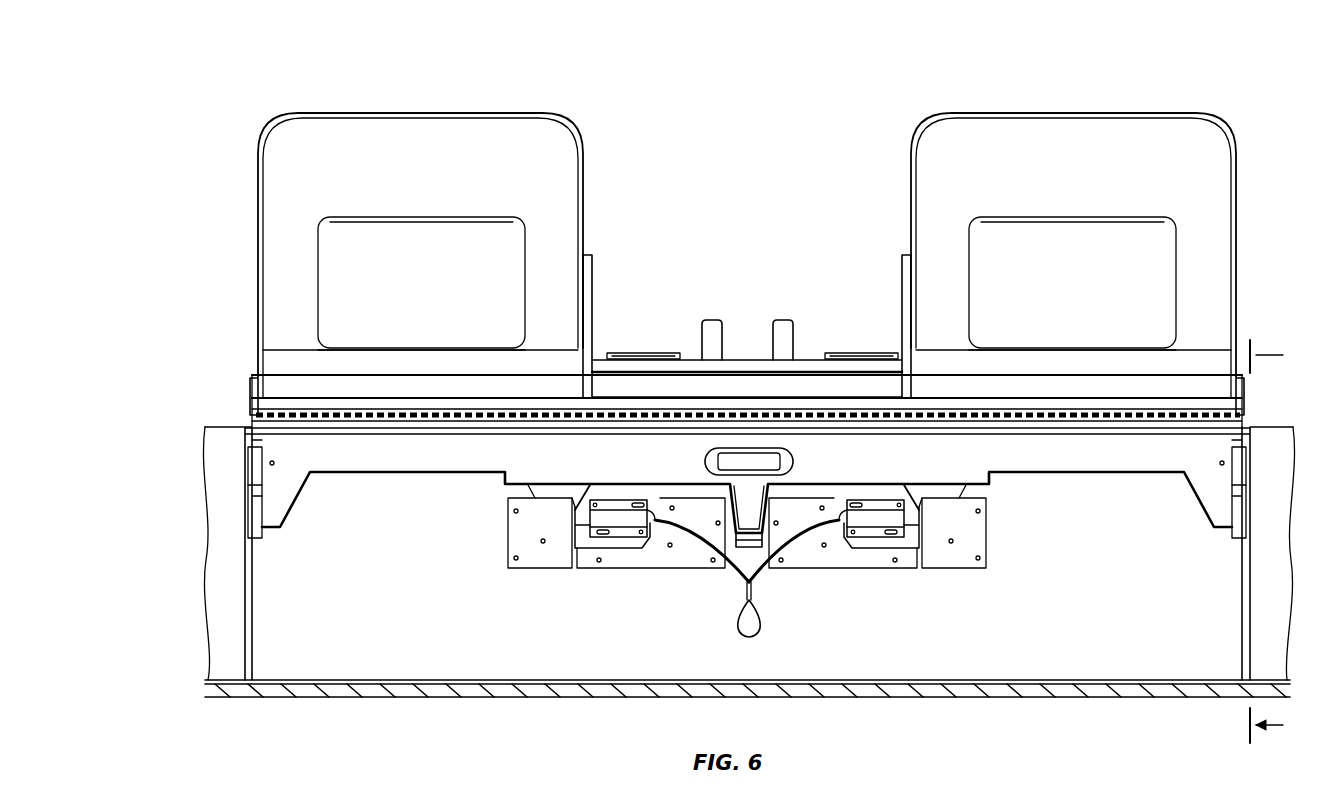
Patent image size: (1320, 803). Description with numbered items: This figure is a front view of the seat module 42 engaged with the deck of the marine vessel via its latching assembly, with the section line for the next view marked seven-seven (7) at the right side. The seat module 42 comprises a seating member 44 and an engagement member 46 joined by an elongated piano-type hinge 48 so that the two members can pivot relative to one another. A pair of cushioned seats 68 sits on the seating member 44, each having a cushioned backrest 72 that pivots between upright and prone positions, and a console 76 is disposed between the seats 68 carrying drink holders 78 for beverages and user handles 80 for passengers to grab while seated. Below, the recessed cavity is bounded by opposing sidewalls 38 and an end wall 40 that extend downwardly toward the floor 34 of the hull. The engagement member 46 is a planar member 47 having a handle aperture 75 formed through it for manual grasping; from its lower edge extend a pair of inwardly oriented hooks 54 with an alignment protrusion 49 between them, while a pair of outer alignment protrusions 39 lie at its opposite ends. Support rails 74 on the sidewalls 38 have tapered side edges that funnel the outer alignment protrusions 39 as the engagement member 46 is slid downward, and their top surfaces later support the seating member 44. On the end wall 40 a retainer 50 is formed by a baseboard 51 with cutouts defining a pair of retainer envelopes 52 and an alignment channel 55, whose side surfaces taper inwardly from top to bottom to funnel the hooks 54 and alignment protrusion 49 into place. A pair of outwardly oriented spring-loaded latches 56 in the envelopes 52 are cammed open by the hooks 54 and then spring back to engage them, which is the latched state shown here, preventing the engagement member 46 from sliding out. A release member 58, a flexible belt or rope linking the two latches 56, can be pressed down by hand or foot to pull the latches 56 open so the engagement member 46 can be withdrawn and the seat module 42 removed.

The seat module 42 is at (1178, 78).
The cushioned seat 68 is at (250, 182).
The cushioned backrest 72 is at (430, 168).
The seating member 44 is at (282, 408).
The hinge 48 is at (258, 420).
The console 76 is at (803, 392).
The drink holder 78 is at (636, 352).
The user handle 80 is at (780, 328).
The section line 7- 7 is at (1275, 541).
The sidewall 38 is at (255, 606).
The floor 34 is at (1032, 681).
The end wall 40 is at (1091, 583).
The alignment protrusion 49 is at (765, 512).
The handle aperture 75 is at (712, 465).
The outer alignment protrusion 39 is at (274, 510).
The engagement member 46 is at (287, 452).
The planar member 47 is at (1212, 447).
The support rail 74 is at (255, 497).
The baseboard 51 is at (968, 522).
The retainer envelope 52 is at (608, 555).
The hook 54 is at (590, 540).
The spring-loaded latch 56 is at (607, 515).
The alignment channel 55 is at (745, 540).
The release member 58 is at (758, 575).
The retainer 50 is at (648, 590).